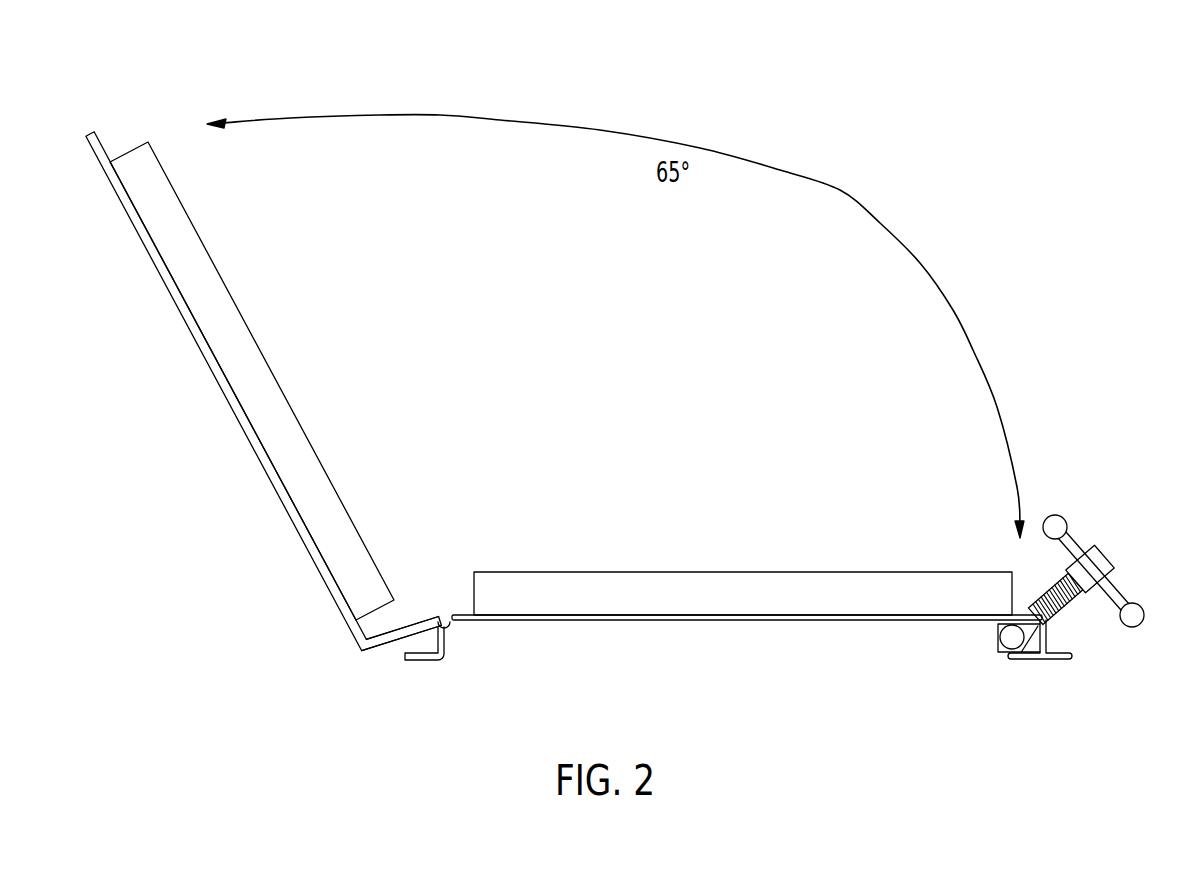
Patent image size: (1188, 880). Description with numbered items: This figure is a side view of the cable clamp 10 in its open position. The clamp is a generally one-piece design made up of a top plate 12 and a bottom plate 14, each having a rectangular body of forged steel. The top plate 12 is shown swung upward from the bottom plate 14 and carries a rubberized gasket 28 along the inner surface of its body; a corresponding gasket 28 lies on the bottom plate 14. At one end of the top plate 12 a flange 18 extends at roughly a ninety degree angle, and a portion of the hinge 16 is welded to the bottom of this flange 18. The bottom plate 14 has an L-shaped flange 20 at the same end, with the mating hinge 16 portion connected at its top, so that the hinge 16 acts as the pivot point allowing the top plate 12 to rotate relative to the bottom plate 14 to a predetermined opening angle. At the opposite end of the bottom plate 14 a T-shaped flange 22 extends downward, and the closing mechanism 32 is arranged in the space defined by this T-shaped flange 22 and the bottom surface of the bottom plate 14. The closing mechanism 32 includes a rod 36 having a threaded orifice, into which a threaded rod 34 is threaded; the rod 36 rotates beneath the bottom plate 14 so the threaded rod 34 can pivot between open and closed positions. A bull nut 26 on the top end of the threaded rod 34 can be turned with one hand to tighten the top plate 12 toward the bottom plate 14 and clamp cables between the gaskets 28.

The cable clamp 10 is at (261, 101).
The top plate 12 is at (94, 141).
The bottom plate 14 is at (533, 620).
The hinge 16 is at (443, 616).
The flange 18 is at (398, 628).
The L-shaped flange 20 is at (425, 658).
The T-shaped flange 22 is at (1035, 660).
The bull nut 26 is at (1099, 563).
The gasket 28 is at (178, 222).
The closing mechanism 32 is at (1032, 556).
The threaded rod 34 is at (1068, 606).
The rod 36 is at (1002, 641).